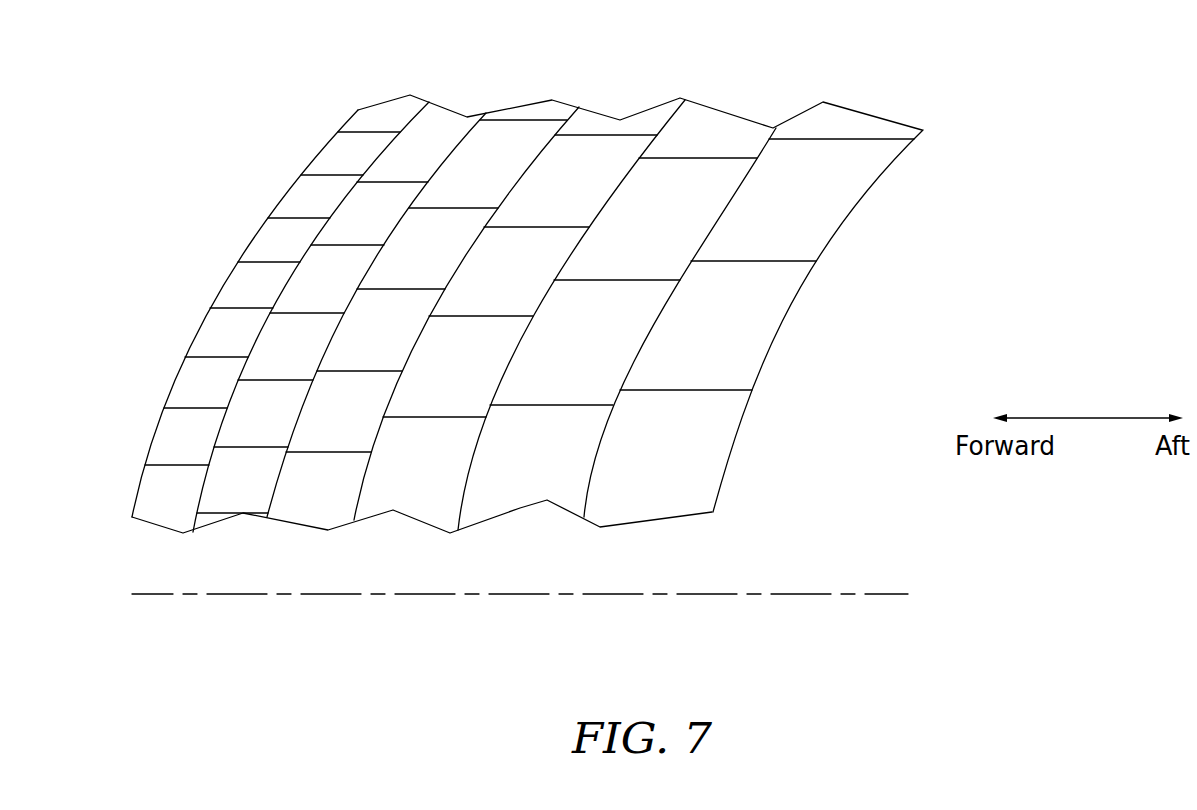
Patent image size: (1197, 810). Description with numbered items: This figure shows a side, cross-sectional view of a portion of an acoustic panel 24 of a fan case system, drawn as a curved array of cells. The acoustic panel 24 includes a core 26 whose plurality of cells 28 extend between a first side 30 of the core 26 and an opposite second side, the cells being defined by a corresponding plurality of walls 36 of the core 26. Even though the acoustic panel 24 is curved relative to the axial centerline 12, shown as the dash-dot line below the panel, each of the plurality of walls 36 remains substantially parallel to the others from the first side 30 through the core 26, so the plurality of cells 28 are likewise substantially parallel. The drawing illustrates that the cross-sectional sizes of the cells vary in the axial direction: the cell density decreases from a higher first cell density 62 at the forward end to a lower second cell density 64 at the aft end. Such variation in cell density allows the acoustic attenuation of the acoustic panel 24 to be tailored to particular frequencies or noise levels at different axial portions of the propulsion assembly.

The axial centerline 12 is at (890, 596).
The acoustic panel 24 is at (578, 279).
The core 26 is at (725, 356).
The plurality of cells 28 is at (729, 306).
The first side of the core 30 is at (845, 181).
The plurality of walls 36 is at (692, 158).
The first cell density 62 is at (213, 268).
The second cell density 64 is at (801, 341).